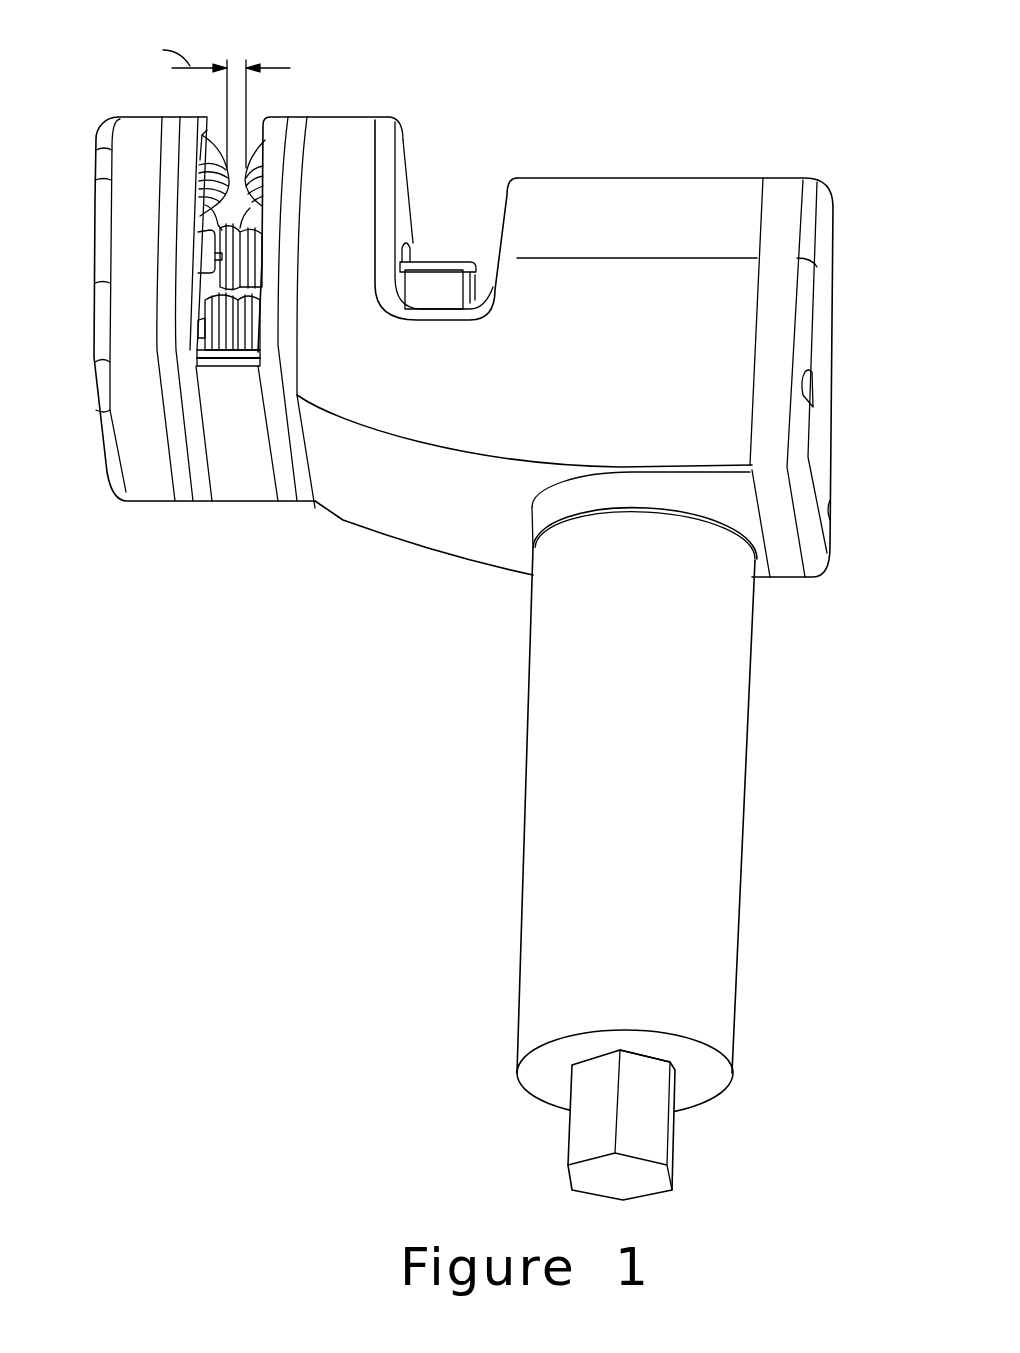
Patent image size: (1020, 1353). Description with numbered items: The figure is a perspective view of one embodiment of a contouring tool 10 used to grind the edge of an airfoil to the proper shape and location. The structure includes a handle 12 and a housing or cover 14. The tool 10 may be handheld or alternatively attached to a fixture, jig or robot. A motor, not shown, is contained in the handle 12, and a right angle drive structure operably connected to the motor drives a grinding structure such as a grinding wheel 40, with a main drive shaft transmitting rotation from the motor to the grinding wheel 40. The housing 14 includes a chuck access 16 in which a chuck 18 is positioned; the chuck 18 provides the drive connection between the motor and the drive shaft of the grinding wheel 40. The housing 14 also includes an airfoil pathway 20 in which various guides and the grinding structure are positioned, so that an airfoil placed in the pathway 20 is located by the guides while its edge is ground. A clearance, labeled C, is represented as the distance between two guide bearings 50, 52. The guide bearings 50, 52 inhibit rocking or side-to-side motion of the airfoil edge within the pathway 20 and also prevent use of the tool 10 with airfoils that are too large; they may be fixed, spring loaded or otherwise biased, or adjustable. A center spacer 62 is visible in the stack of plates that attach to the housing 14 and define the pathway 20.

The contouring tool 10 is at (758, 93).
The handle 12 is at (562, 765).
The housing 14 is at (608, 210).
The chuck access 16 is at (475, 210).
The chuck 18 is at (443, 260).
The airfoil pathway 20 is at (260, 120).
The grinding wheel 40 is at (220, 283).
The guide bearing 50 is at (253, 183).
The guide bearing 52 is at (227, 182).
The center spacer 62 is at (238, 485).